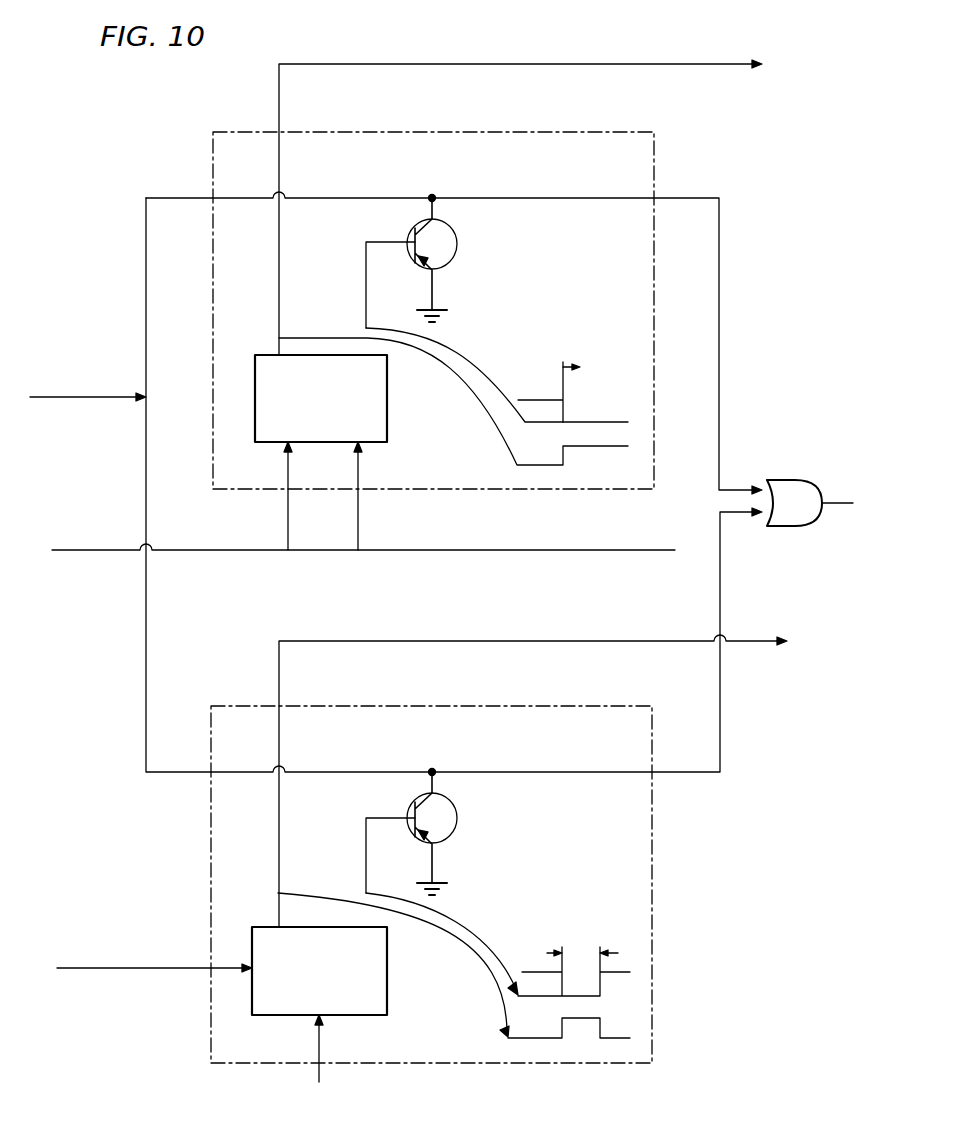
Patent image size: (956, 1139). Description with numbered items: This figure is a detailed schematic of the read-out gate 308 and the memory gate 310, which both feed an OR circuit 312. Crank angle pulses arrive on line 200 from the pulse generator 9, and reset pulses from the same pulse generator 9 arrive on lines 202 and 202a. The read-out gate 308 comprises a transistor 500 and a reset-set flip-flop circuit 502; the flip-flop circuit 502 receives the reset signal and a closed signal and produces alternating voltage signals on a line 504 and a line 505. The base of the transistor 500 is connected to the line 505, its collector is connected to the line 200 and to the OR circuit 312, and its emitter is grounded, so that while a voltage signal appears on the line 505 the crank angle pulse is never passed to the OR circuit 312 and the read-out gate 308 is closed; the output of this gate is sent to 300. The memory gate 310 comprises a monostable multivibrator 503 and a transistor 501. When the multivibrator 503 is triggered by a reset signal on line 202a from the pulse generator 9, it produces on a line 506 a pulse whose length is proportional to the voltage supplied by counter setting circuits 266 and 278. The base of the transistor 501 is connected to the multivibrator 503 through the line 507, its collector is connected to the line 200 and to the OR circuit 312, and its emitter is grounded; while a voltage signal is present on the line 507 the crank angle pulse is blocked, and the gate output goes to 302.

The line 200 is at (88, 405).
The line 202 is at (361, 515).
The line 202a is at (154, 957).
The pulse generator 9 is at (95, 384).
The counter setting circuit 266 is at (419, 1060).
The counter setting circuit 278 is at (482, 1093).
The output to 300 is at (555, 207).
The output to 302 is at (565, 781).
The read-out gate 308 is at (654, 262).
The memory gate 310 is at (653, 830).
The OR circuit 312 is at (792, 468).
The transistor 500 is at (456, 249).
The transistor 501 is at (456, 822).
The reset-set flip-flop circuit 502 is at (390, 434).
The monostable multivibrator 503 is at (389, 1000).
The line 504 is at (537, 470).
The line 505 is at (514, 400).
The line 506 is at (503, 1038).
The line 507 is at (527, 960).